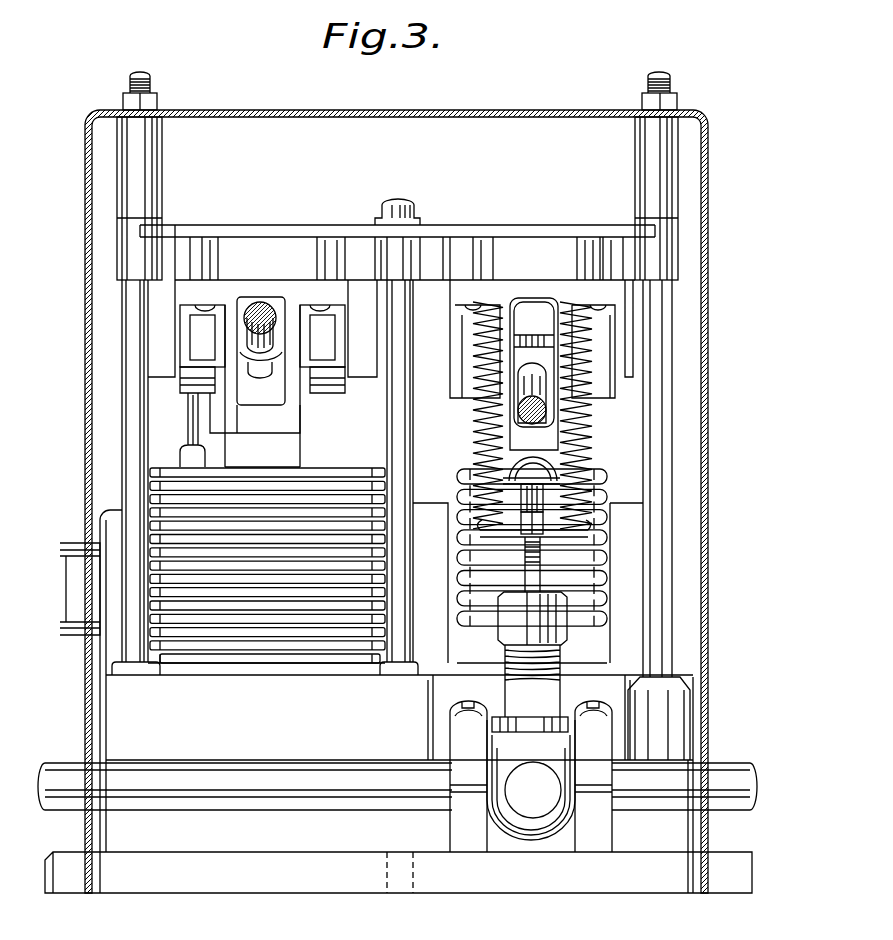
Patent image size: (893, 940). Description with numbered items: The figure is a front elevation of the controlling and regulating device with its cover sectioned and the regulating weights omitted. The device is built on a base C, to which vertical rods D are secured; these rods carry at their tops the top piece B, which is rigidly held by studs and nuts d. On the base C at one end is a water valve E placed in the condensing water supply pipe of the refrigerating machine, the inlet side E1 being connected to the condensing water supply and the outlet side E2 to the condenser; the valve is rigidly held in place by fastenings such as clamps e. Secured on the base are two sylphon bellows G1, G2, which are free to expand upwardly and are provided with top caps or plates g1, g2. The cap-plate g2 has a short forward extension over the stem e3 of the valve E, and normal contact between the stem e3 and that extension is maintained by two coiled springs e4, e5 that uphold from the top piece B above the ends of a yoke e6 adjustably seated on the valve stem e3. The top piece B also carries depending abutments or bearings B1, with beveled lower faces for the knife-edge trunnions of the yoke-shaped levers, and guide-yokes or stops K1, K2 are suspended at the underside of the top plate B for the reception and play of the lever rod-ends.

The base C is at (334, 851).
The studs and nuts d is at (162, 193).
The top piece B is at (521, 226).
The depending abutments or bearings B1 is at (153, 307).
The guide-yoke or stop K1 is at (293, 420).
The top cap or plate g1 is at (178, 461).
The coiled spring e4 is at (472, 419).
The coiled spring e5 is at (596, 441).
The guide-yoke or stop K2 is at (581, 447).
The top cap or plate g2 is at (594, 479).
The yoke e6 is at (545, 530).
The valve stem e3 is at (530, 560).
The sylphon bellows G2 is at (614, 569).
The sylphon bellows G1 is at (220, 648).
The vertical rods D is at (130, 358).
The outlet side of condensing water supply pipe E2 is at (245, 786).
The inlet side of condensing water supply pipe E1 is at (684, 786).
The water valve E is at (531, 778).
The clamps e is at (594, 846).